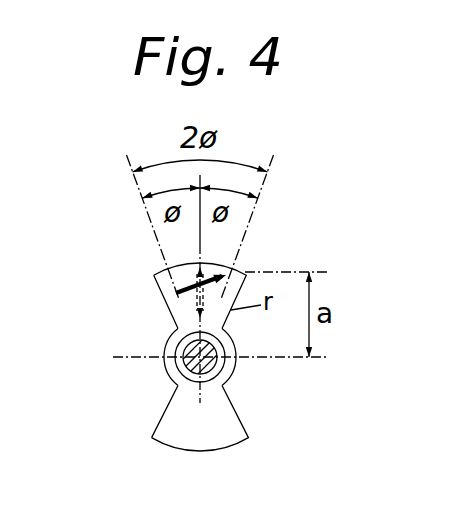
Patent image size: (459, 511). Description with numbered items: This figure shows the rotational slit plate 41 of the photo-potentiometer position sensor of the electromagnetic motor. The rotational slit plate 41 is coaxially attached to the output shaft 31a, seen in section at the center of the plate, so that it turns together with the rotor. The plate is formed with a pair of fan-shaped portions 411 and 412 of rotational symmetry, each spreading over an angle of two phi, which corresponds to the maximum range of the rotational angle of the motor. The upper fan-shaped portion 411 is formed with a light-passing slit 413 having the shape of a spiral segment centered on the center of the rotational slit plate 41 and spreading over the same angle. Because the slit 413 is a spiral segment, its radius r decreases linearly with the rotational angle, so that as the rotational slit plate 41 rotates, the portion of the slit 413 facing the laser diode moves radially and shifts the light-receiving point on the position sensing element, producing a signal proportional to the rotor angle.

The rotational slit plate 41 is at (229, 368).
The fan-shaped portion 411 is at (236, 260).
The fan-shaped portion 412 is at (172, 423).
The light-passing slit 413 is at (157, 283).
The output shaft 31a is at (213, 367).